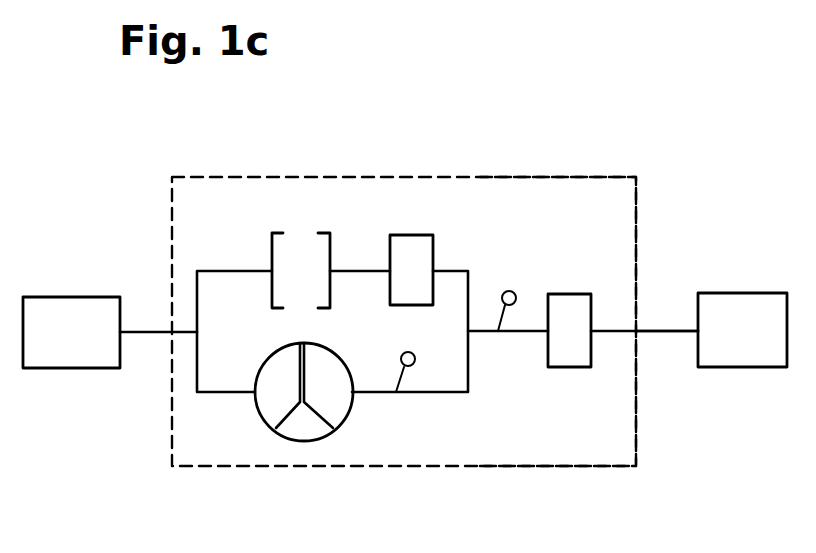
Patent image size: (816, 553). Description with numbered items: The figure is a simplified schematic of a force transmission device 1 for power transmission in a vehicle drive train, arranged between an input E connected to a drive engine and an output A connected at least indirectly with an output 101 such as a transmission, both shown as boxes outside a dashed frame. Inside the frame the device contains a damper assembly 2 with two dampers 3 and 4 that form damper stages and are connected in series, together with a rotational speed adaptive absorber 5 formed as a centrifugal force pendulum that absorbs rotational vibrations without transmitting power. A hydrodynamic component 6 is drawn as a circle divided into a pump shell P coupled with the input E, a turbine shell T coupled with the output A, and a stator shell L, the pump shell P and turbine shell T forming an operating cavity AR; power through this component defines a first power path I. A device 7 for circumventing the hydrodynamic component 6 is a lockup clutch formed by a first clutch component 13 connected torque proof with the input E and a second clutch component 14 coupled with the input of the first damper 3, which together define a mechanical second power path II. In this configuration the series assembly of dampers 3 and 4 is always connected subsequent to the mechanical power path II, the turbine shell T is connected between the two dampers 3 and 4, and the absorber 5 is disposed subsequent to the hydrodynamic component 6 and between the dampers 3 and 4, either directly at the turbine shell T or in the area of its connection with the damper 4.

The force transmission device 1 is at (218, 177).
The damper assembly 2 is at (540, 198).
The first damper 3 is at (410, 252).
The second damper 4 is at (571, 310).
The rotational speed adaptive absorber 5 is at (510, 291).
The hydrodynamic component 6 is at (312, 441).
The device for circumventing the hydrodynamic component 7 is at (300, 208).
The first clutch component 13 is at (277, 232).
The second clutch component 14 is at (325, 232).
The output 101 is at (72, 312).
The second power path II is at (390, 197).
The first power path I is at (205, 440).
The input E is at (140, 331).
The output A is at (670, 331).
The pump shell P is at (273, 402).
The stator shell L is at (302, 418).
The turbine shell T is at (327, 418).
The operating cavity AR is at (336, 402).